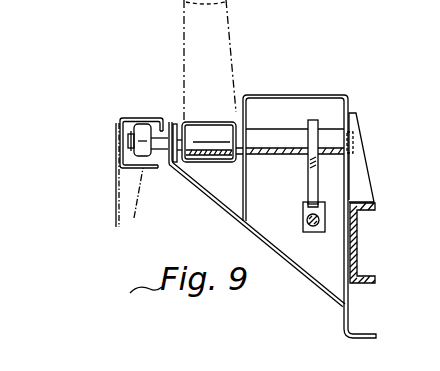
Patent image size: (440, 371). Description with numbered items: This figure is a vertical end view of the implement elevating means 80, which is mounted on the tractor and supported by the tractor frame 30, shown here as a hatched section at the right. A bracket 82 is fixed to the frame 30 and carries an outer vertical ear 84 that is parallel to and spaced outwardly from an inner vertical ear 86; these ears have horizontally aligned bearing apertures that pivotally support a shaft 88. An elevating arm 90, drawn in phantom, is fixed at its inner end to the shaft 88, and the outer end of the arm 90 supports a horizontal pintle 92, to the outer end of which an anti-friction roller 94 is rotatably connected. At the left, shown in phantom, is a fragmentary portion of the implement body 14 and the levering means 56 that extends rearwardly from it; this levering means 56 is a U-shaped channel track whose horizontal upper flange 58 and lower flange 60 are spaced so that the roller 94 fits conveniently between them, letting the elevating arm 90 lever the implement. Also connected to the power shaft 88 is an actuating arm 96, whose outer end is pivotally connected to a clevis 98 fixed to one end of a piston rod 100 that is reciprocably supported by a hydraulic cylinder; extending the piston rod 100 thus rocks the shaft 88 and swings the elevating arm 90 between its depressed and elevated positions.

The body 14 is at (114, 172).
The frame 30 is at (358, 243).
The levering means 56 is at (134, 170).
The upper flange 58 is at (122, 118).
The lower flange 60 is at (135, 203).
The implement elevating means 80 is at (189, 194).
The bracket 82 is at (316, 95).
The outer vertical ear 84 is at (172, 166).
The inner vertical ear 86 is at (350, 188).
The shaft 88 is at (273, 137).
The elevating arm 90 is at (188, 43).
The horizontal pintle 92 is at (156, 134).
The anti-friction roller 94 is at (142, 126).
The actuating arm 96 is at (308, 178).
The clevis 98 is at (303, 213).
The piston rod 100 is at (314, 228).